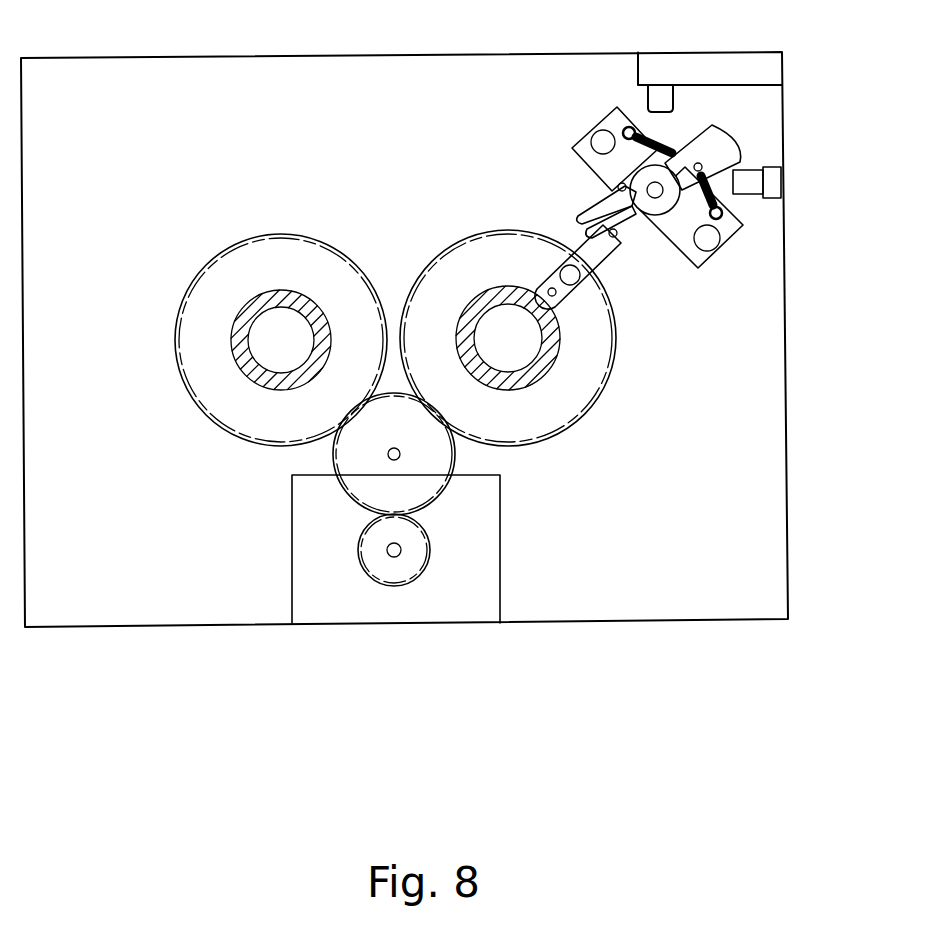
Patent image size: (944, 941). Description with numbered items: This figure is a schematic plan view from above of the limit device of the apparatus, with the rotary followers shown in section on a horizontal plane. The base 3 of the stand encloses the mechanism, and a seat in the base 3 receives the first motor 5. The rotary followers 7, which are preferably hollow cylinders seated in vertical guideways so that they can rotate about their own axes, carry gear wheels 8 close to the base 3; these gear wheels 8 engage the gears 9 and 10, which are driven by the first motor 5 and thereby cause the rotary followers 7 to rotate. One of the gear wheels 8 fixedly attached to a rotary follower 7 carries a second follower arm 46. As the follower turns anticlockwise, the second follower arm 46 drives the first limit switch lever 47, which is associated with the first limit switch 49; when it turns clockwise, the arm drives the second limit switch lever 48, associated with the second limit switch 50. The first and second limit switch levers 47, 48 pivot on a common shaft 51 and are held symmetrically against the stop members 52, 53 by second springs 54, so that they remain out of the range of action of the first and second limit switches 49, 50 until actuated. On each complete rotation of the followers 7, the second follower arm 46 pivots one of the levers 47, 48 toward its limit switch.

The base 3 is at (771, 462).
The first motor 5 is at (382, 607).
The rotary follower 7 is at (440, 292).
The gear wheel 8 is at (200, 300).
The gear 9 is at (425, 482).
The gear 10 is at (370, 553).
The second follower arm 46 is at (584, 256).
The first limit switch lever 47 is at (627, 225).
The second limit switch lever 48 is at (600, 207).
The first limit switch 49 is at (752, 190).
The second limit switch 50 is at (663, 98).
The common shaft 51 is at (657, 187).
The stop member 52 is at (660, 222).
The stop member 53 is at (603, 183).
The second spring 54 is at (637, 125).